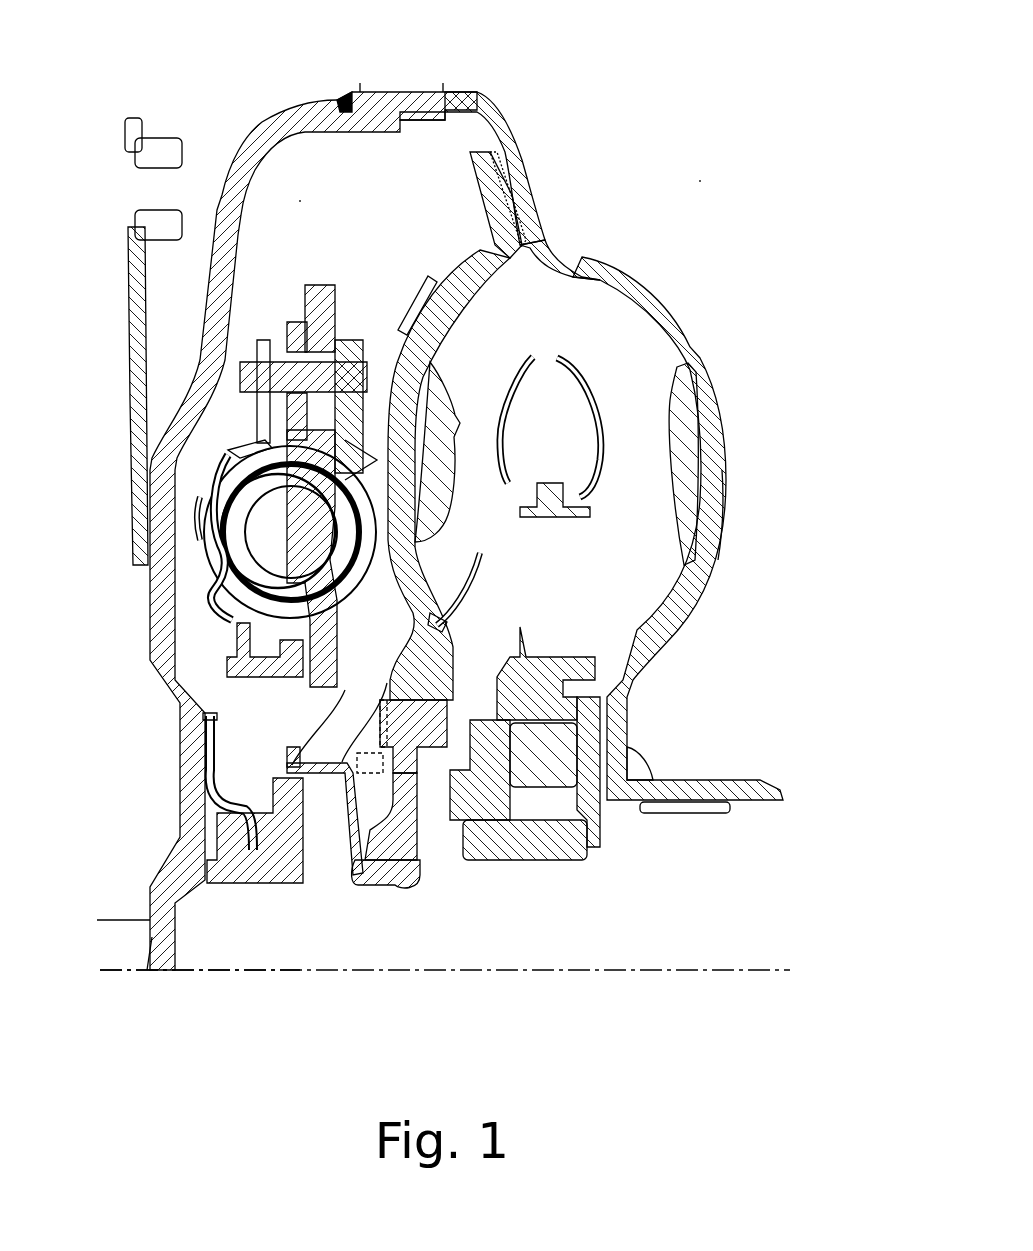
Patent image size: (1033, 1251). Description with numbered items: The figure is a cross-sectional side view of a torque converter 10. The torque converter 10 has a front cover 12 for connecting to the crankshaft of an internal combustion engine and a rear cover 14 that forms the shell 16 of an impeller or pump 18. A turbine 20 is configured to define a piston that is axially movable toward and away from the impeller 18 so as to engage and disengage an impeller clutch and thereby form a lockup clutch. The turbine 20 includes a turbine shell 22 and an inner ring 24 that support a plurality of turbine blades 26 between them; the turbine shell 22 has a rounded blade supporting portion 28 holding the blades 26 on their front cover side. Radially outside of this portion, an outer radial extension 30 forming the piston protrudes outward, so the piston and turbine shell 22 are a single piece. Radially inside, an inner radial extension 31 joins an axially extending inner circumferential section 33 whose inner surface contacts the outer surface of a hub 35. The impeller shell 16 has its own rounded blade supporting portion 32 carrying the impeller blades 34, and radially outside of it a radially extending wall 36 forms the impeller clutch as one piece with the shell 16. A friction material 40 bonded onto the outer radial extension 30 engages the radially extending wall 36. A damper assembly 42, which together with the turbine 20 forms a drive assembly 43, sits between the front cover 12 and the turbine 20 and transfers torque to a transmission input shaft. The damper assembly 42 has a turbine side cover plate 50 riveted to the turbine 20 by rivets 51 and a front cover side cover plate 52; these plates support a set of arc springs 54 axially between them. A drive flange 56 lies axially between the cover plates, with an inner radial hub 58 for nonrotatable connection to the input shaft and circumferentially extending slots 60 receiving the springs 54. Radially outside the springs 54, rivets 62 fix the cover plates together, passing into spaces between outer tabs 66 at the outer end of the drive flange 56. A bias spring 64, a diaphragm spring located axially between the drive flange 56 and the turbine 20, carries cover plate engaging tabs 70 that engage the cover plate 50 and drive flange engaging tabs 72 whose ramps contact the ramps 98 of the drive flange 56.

The torque converter 10 is at (738, 188).
The front cover 12 is at (302, 116).
The rear cover 14 is at (500, 130).
The shell 16 is at (693, 535).
The impeller 18 is at (667, 326).
The turbine 20 is at (433, 186).
The turbine shell 22 is at (466, 284).
The inner ring 24 is at (530, 360).
The turbine blades 26 is at (448, 394).
The rounded blade supporting portion 28 is at (400, 330).
The outer radial extension 30 is at (485, 178).
The inner radial extension 31 is at (445, 656).
The rounded blade supporting portion 32 is at (713, 517).
The axially extending inner circumferential section 33 is at (376, 856).
The impeller blades 34 is at (690, 443).
The hub 35 is at (413, 880).
The radially extending wall 36 is at (537, 214).
The friction material 40 is at (512, 165).
The damper assembly 42 is at (313, 215).
The drive assembly 43 is at (220, 950).
The turbine side cover plate 50 is at (352, 410).
The rivets 51 is at (436, 728).
The front cover side cover plate 52 is at (262, 448).
The arc springs 54 is at (218, 532).
The drive flange 56 is at (294, 738).
The inner radial hub 58 is at (260, 877).
The circumferentially extending slots 60 is at (340, 684).
The rivets 62 is at (285, 364).
The bias spring 64 is at (318, 345).
The outer tabs 66 is at (327, 293).
The cover plate engaging tabs 70 is at (372, 750).
The drive flange engaging tabs 72 is at (328, 775).
The ramps 98 is at (292, 755).